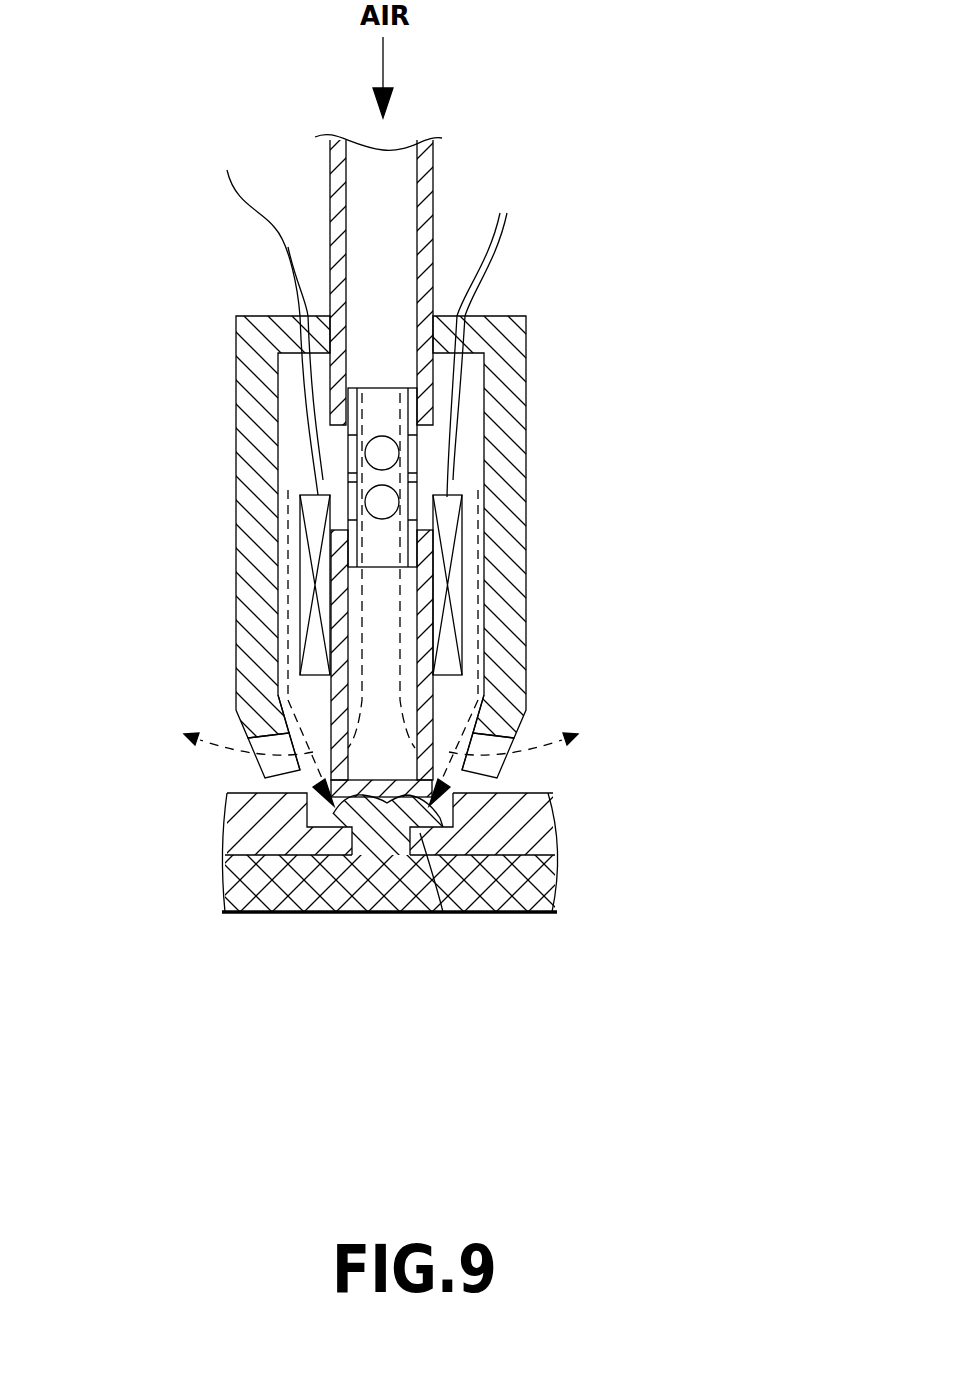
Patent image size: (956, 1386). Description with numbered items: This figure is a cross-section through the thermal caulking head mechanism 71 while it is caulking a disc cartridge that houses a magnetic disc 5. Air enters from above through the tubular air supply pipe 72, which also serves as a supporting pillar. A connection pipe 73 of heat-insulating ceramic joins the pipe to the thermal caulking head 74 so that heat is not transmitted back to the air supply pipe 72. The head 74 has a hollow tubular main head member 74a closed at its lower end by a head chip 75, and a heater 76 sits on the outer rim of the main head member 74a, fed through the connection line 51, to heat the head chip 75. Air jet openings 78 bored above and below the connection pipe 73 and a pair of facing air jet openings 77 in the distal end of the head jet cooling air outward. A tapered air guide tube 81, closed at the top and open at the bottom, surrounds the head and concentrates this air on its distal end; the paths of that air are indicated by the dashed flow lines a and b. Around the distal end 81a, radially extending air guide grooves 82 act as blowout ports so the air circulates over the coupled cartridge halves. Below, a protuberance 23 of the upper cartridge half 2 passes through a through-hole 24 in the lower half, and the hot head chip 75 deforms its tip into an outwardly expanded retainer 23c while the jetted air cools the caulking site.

The air blowing unit 71 is at (535, 172).
The air supply pipe 72 is at (422, 175).
The connection line 51 is at (264, 309).
The magnetic disc 5 is at (500, 258).
The air guide tube 81 is at (527, 353).
The distal end of the air guide tube 81a is at (495, 735).
The air guide grooves 82 is at (262, 772).
The air jet openings 78 is at (365, 440).
The connection pipe 73 is at (412, 478).
The heater 76 is at (313, 572).
The thermal caulking head 74 is at (403, 638).
The main head member 74a is at (340, 688).
The air jet openings 77 is at (328, 728).
The head chip 75 is at (330, 800).
The protuberance 23 is at (362, 813).
The retainer 23c is at (443, 912).
The through-hole 24 is at (398, 838).
The upper cartridge half 2 is at (513, 887).
The air flow path a is at (280, 597).
The air flow path b is at (485, 592).